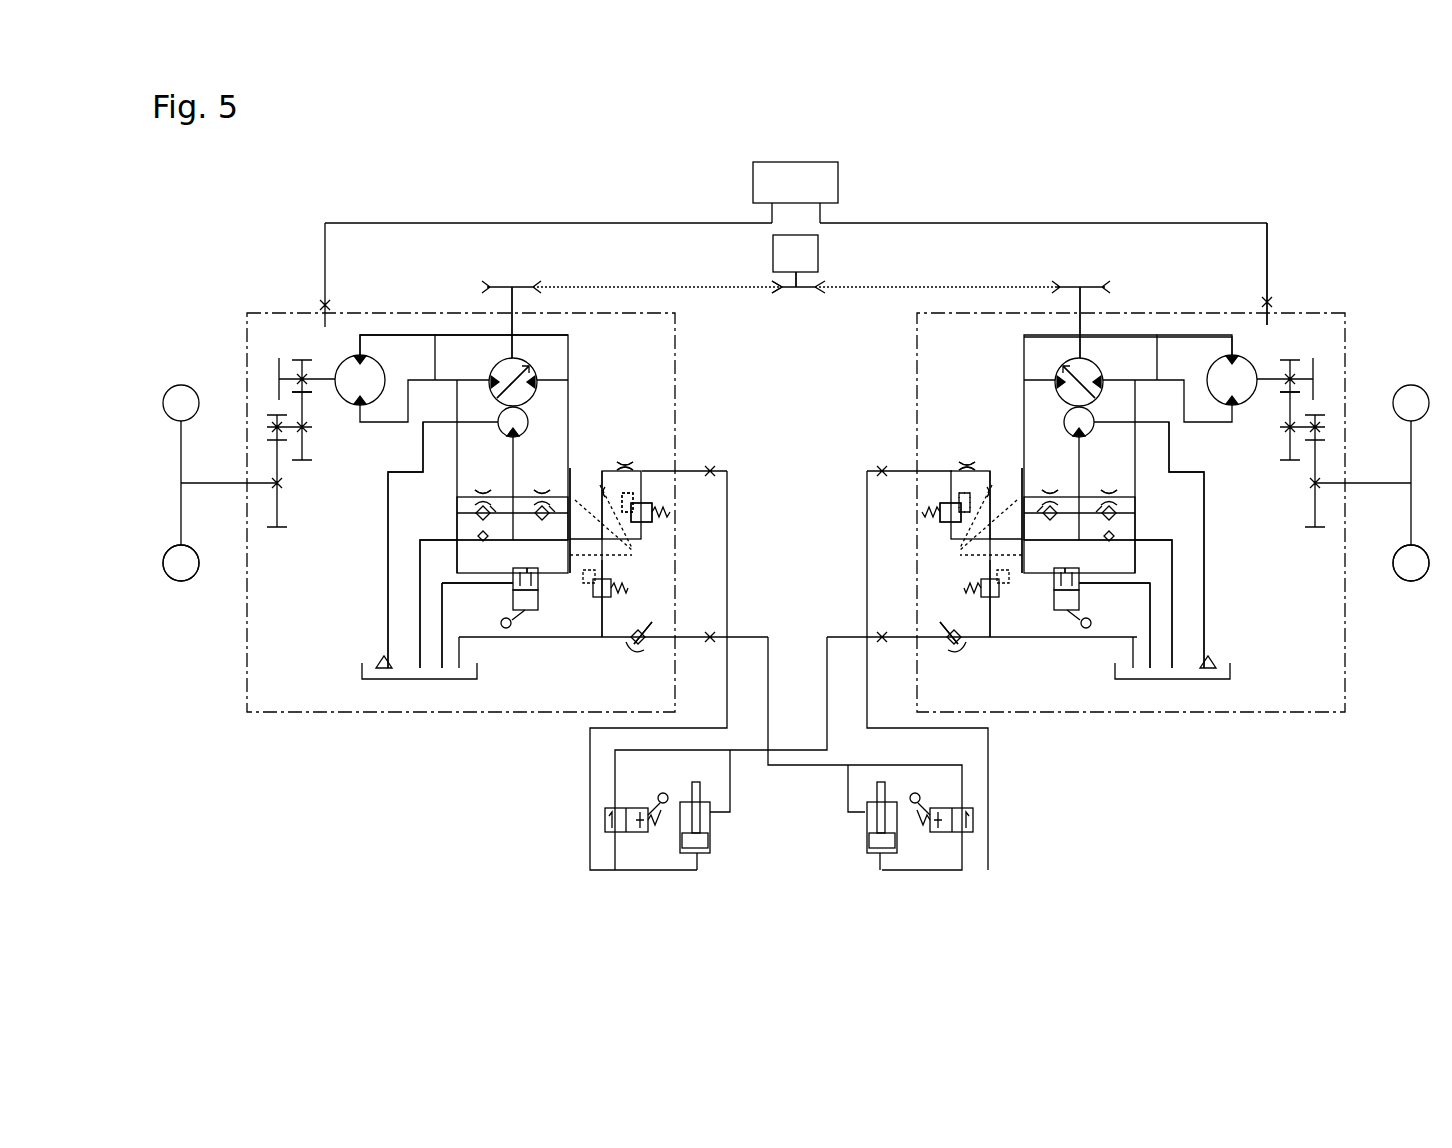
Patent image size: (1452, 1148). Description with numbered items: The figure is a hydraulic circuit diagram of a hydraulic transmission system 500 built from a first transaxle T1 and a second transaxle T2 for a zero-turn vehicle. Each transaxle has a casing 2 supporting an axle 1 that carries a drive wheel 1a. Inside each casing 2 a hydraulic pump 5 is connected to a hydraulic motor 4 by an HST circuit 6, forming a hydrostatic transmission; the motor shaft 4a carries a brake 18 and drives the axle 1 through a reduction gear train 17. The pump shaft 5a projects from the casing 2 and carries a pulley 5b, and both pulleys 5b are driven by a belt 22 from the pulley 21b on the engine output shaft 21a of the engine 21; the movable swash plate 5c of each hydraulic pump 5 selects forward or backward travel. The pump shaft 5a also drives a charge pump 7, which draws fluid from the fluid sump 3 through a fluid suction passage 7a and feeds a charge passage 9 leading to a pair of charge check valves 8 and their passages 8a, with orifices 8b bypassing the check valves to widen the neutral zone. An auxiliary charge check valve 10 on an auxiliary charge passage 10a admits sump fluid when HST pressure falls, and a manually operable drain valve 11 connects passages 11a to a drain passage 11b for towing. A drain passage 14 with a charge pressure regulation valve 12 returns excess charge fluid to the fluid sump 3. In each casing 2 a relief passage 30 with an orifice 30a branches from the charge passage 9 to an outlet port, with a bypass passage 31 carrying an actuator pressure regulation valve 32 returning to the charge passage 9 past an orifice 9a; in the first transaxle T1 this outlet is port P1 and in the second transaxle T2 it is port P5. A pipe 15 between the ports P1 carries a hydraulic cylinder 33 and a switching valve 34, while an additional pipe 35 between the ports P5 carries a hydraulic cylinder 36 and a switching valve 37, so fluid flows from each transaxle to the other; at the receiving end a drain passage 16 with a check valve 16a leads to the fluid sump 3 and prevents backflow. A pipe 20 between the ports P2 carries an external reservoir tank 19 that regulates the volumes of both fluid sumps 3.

The axle 1 is at (210, 480).
The drive wheel 1a is at (181, 600).
The casing 2 is at (678, 392).
The fluid sump 3 is at (362, 674).
The hydraulic motor 4 is at (384, 370).
The motor shaft 4a is at (307, 404).
The hydraulic pump 5 is at (531, 366).
The pump shaft 5a is at (520, 322).
The pulley 5b is at (508, 286).
The movable swash plate 5c is at (497, 364).
The HST circuit 6 is at (440, 333).
The charge pump 7 is at (530, 422).
The fluid suction passage 7a is at (420, 456).
The charge check valves 8 is at (497, 512).
The passages 8a is at (568, 406).
The orifices 8b is at (482, 489).
The charge passage 9 is at (1080, 530).
The orifice 9a is at (572, 468).
The auxiliary charge check valve 10 is at (796, 599).
The auxiliary charge passage 10a is at (424, 540).
The drain valve 11 is at (540, 606).
The passages 11a is at (527, 570).
The drain passage 11b is at (442, 590).
The charge pressure regulation valve 12 is at (614, 595).
The drain passage 14 is at (612, 573).
The pipe 15 is at (672, 885).
The drain passage 16 is at (640, 645).
The check valve 16a is at (650, 628).
The reduction gear train 17 is at (321, 479).
The brake 18 is at (279, 358).
The external reservoir tank 19 is at (840, 183).
The pipe 20 is at (632, 222).
The engine 21 is at (818, 255).
The engine output shaft 21a is at (796, 290).
The pulley 21b is at (780, 290).
The belt 22 is at (590, 287).
The relief passage 30 is at (650, 470).
The orifice 30a is at (625, 460).
The bypass passage 31 is at (636, 496).
The actuator pressure regulation valve 32 is at (668, 516).
The hydraulic cylinder 33 is at (712, 822).
The switching valve 34 is at (603, 822).
The pipe 35 is at (862, 546).
The hydraulic cylinder 36 is at (863, 836).
The switching valve 37 is at (975, 822).
The hydraulic transmission system 500 is at (545, 179).
The port P1 is at (710, 477).
The port P2 is at (1262, 302).
The port P5 is at (710, 642).
The first transaxle T1 is at (277, 276).
The second transaxle T2 is at (1326, 271).